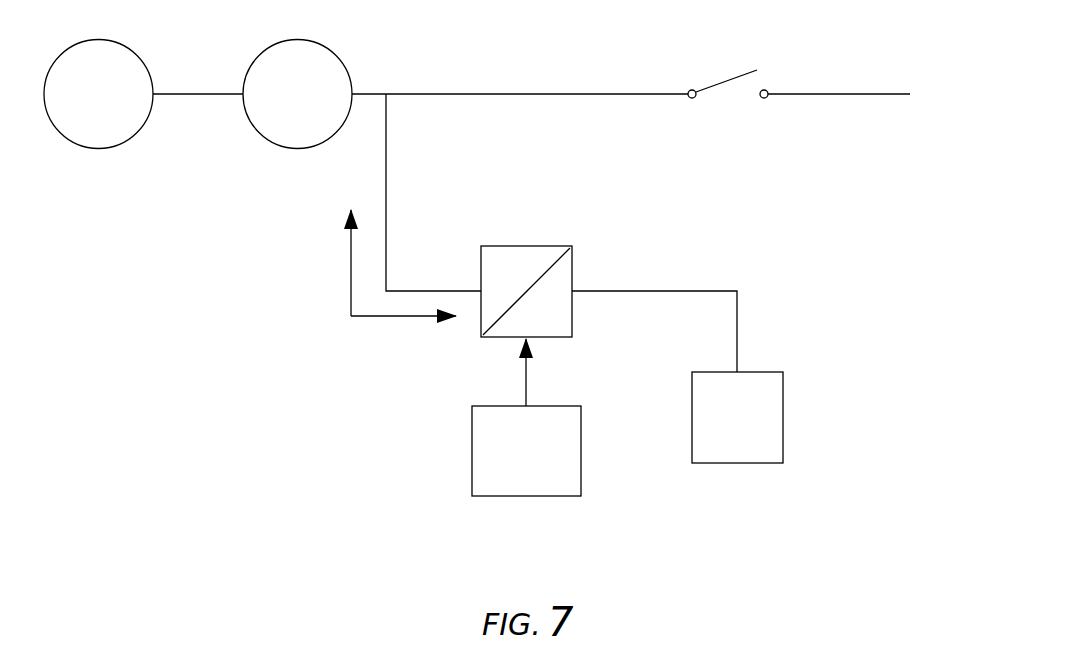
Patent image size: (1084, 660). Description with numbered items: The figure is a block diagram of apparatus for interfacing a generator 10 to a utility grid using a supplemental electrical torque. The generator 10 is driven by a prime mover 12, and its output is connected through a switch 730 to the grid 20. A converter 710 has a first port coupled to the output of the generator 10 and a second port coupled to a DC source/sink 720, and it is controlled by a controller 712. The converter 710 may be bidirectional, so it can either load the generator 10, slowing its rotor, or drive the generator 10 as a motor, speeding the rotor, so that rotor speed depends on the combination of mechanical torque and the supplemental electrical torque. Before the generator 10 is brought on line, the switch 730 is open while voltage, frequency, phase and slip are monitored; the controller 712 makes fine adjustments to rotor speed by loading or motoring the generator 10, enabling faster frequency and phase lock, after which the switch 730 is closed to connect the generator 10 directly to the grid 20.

The prime mover 12 is at (100, 40).
The generator 10 is at (298, 40).
The switch 730 is at (768, 44).
The grid 20 is at (845, 94).
The converter 710 is at (525, 246).
The DC source/sink 720 is at (737, 463).
The controller 712 is at (527, 496).